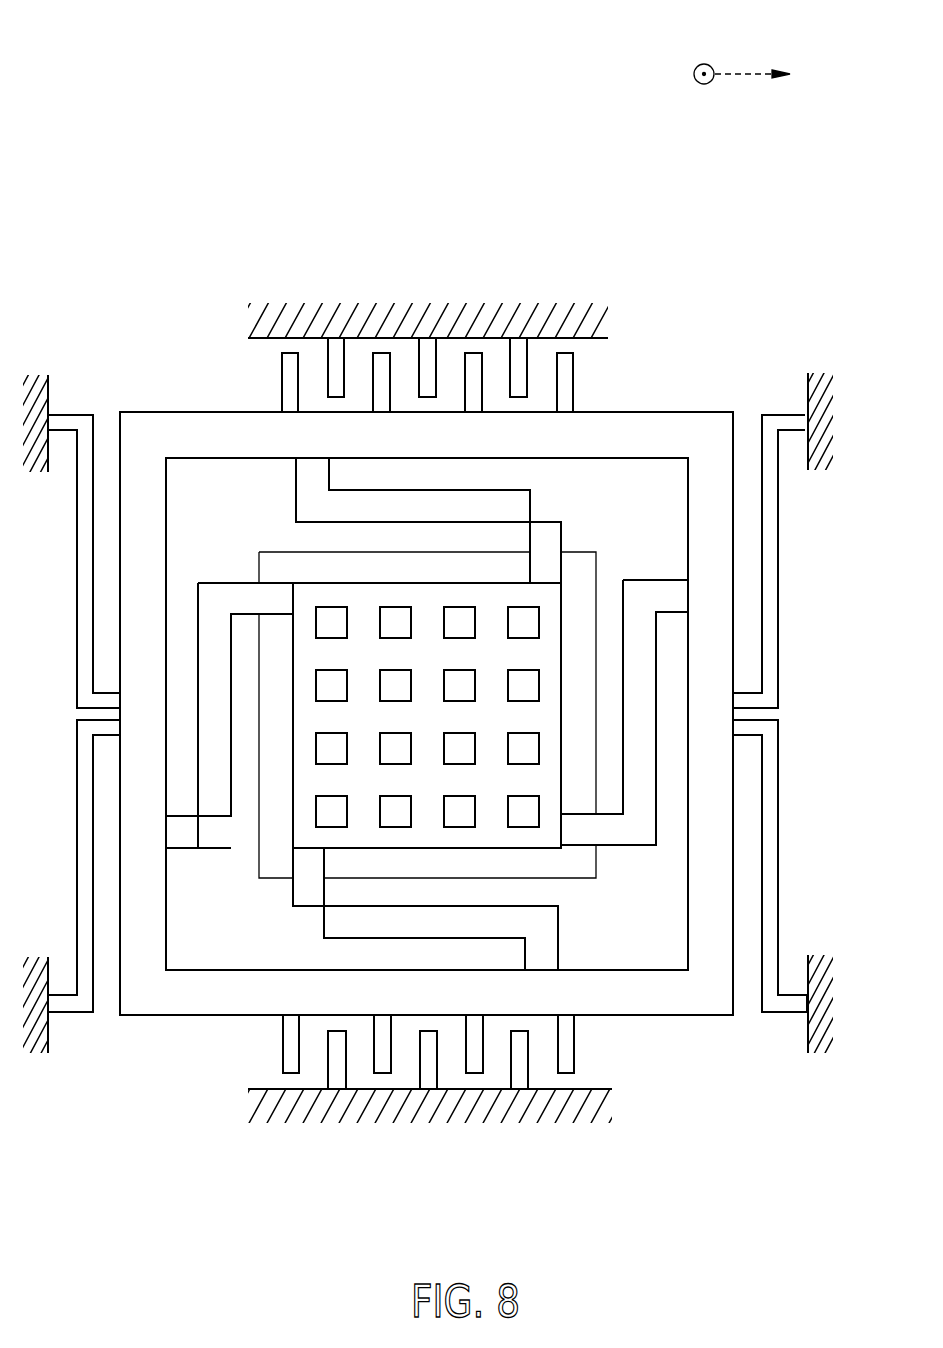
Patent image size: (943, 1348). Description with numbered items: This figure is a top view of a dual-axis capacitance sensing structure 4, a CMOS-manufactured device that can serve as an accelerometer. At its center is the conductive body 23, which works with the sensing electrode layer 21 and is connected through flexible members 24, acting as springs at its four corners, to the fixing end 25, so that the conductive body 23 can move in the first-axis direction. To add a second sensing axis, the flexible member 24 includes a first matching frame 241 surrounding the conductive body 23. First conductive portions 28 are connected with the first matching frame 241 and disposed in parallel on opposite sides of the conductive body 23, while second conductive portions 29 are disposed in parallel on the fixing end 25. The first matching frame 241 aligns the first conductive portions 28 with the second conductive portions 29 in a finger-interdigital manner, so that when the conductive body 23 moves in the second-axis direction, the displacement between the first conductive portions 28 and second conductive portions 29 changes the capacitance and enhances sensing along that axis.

The dual-axis capacitance sensing structure 4 is at (110, 24).
The sensing electrode layer 21 is at (505, 552).
The conductive body 23 is at (305, 583).
The flexible member 24 is at (447, 661).
The first matching frame 241 is at (670, 425).
The fixing end 25 is at (368, 1123).
The first conductive portion 28 is at (575, 1043).
The second conductive portion 29 is at (528, 1060).